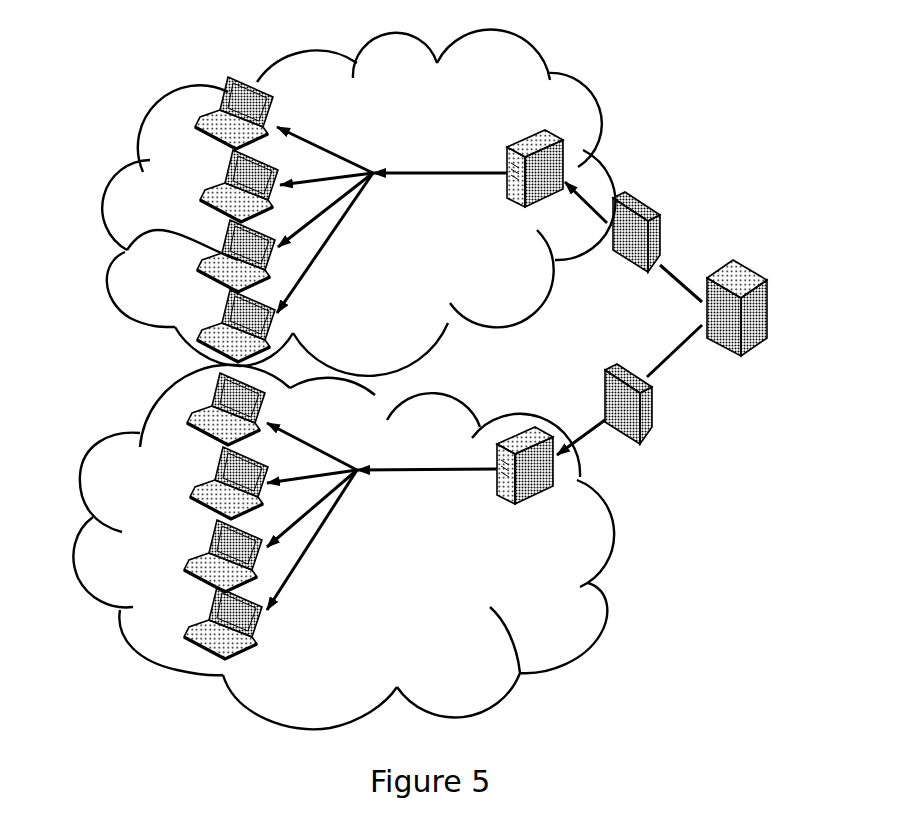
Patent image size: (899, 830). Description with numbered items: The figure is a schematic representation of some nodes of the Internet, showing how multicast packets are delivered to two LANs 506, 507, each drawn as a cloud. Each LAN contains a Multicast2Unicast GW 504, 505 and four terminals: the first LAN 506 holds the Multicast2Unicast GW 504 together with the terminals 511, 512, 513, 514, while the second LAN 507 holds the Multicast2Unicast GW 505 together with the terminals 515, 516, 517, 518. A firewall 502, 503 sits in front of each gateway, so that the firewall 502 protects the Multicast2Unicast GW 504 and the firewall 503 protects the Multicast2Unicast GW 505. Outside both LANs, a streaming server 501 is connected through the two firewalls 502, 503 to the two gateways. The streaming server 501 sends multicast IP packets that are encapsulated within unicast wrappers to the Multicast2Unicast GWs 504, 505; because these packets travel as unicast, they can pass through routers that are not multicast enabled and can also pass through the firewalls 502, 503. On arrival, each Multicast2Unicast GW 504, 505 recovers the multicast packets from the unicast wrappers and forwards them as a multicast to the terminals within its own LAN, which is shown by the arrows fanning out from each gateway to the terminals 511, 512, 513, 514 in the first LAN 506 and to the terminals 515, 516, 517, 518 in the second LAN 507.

The streaming server 501 is at (768, 325).
The firewall 502 is at (642, 198).
The firewall 503 is at (653, 425).
The Multicast2Unicast GW 504 is at (550, 127).
The Multicast2Unicast GW 505 is at (517, 422).
The LAN 506 is at (378, 45).
The LAN 507 is at (607, 610).
The terminal 511 is at (218, 93).
The terminal 512 is at (218, 187).
The terminal 513 is at (158, 255).
The terminal 514 is at (205, 325).
The terminal 515 is at (198, 410).
The terminal 516 is at (202, 486).
The terminal 517 is at (200, 558).
The terminal 518 is at (203, 622).